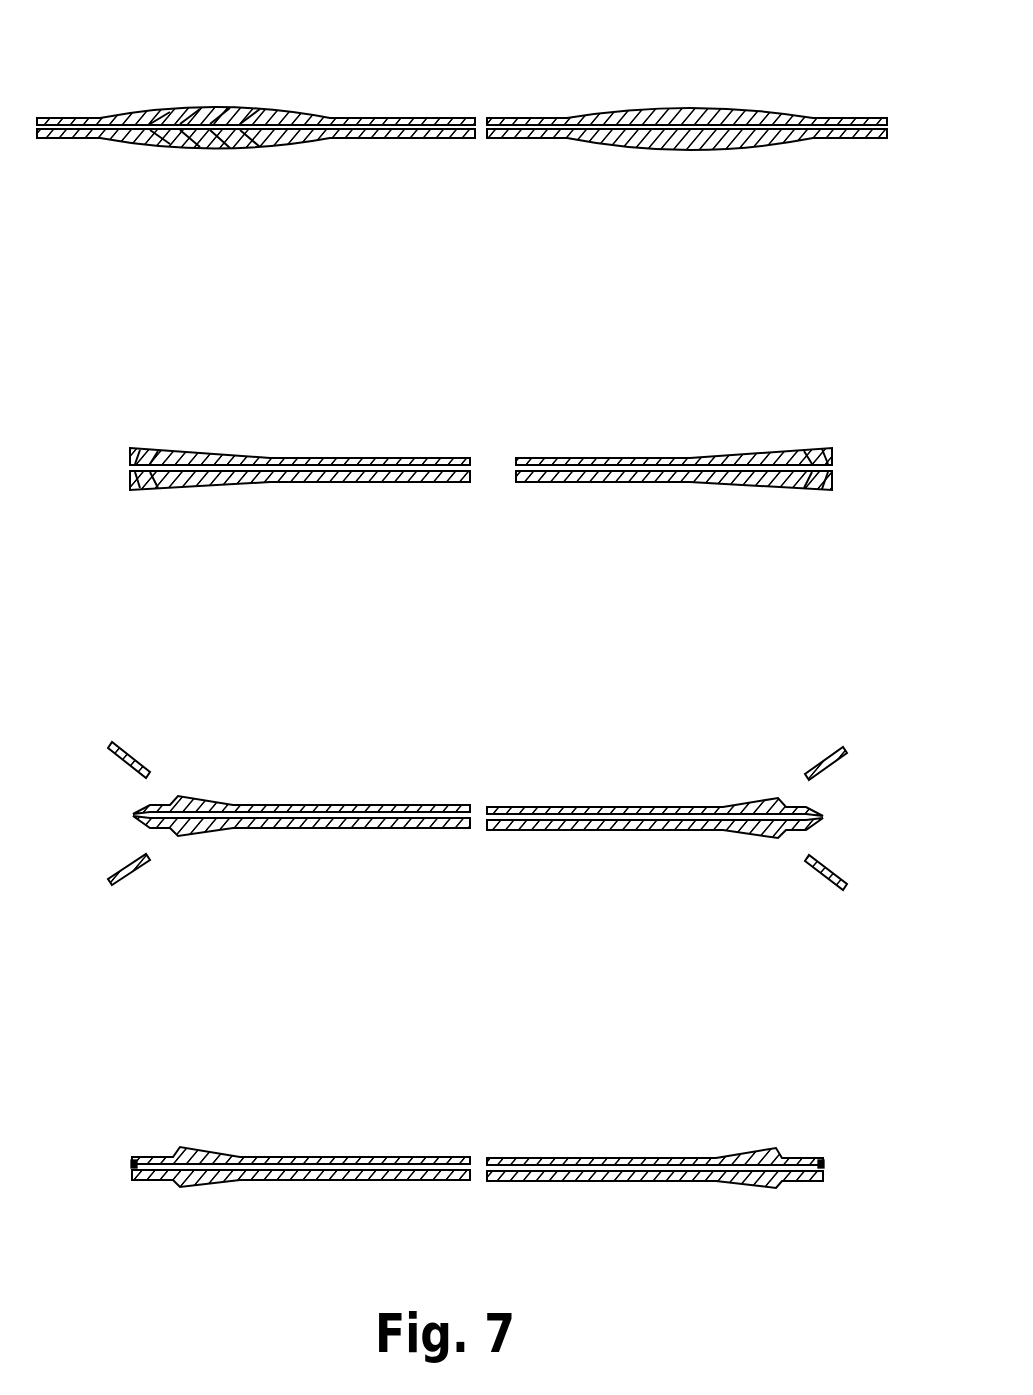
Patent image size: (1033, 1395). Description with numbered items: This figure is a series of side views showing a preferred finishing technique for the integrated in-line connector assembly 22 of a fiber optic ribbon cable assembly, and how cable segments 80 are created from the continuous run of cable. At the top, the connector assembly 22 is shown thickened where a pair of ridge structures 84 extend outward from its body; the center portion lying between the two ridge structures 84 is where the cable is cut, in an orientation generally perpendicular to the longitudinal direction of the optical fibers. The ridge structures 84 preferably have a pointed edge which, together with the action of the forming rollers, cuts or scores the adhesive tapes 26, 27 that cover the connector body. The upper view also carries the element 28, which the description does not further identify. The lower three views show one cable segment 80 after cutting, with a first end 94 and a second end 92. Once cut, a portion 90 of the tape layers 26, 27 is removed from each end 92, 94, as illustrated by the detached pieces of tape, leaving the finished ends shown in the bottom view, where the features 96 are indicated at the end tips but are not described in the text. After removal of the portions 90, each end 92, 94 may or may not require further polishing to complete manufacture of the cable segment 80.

The connector assembly 22 is at (256, 125).
The adhesive tape 26 is at (768, 106).
The adhesive tape 27 is at (768, 152).
The braided tubular structure with thickened region 28 is at (462, 111).
The cable segment 80 is at (477, 790).
The ridge structure 84 is at (190, 110).
The portion of tape layers 90 is at (143, 450).
The end of cable segment 92 is at (832, 468).
The end of cable segment 94 is at (130, 468).
The end tip remnant 96 is at (133, 1158).